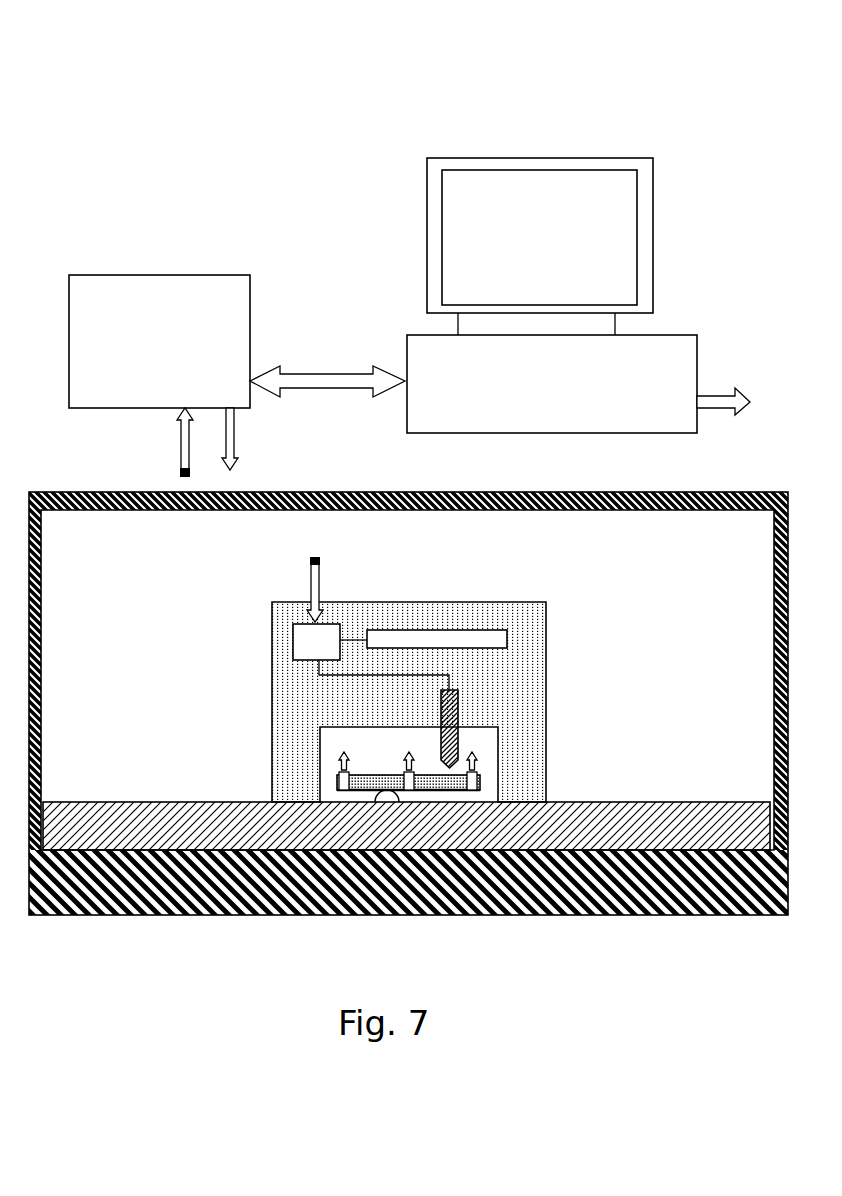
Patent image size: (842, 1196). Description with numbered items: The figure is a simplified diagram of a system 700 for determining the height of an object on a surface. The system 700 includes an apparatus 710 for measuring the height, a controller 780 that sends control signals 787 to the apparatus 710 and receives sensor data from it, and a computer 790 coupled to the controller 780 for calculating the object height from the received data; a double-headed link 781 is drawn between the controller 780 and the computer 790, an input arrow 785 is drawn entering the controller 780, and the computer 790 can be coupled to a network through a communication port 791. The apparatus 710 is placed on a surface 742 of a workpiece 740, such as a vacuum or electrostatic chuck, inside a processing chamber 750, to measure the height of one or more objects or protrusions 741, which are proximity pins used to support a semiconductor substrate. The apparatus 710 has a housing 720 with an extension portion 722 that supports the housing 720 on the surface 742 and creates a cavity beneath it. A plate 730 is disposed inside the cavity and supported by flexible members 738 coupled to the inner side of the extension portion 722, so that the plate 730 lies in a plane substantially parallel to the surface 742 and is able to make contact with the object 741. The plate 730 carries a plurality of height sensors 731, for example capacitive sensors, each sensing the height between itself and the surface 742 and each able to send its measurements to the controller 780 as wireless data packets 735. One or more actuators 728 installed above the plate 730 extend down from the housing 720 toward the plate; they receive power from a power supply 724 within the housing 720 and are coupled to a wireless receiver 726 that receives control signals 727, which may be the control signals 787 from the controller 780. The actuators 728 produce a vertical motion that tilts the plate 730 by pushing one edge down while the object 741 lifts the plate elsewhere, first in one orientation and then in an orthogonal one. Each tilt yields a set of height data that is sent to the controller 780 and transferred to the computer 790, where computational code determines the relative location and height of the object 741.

The system 700 is at (116, 106).
The apparatus 710 is at (408, 703).
The housing 720 is at (422, 691).
The extension portion 722 is at (531, 745).
The power supply 724 is at (446, 625).
The wireless receiver 726 is at (286, 640).
The control signals 727 is at (338, 589).
The actuators 728 is at (470, 692).
The plate 730 is at (415, 759).
The height sensors 731 is at (330, 775).
The wireless data packets 735 is at (318, 747).
The flexible members 738 is at (490, 765).
The workpiece 740 is at (730, 839).
The object or protrusion 741 is at (396, 802).
The surface 742 is at (703, 796).
The processing chamber 750 is at (732, 563).
The controller 780 is at (159, 341).
The communication link 781 is at (327, 367).
The controller input 785 is at (164, 442).
The control signals 787 is at (254, 439).
The computer 790 is at (552, 295).
The communication port 791 is at (736, 388).